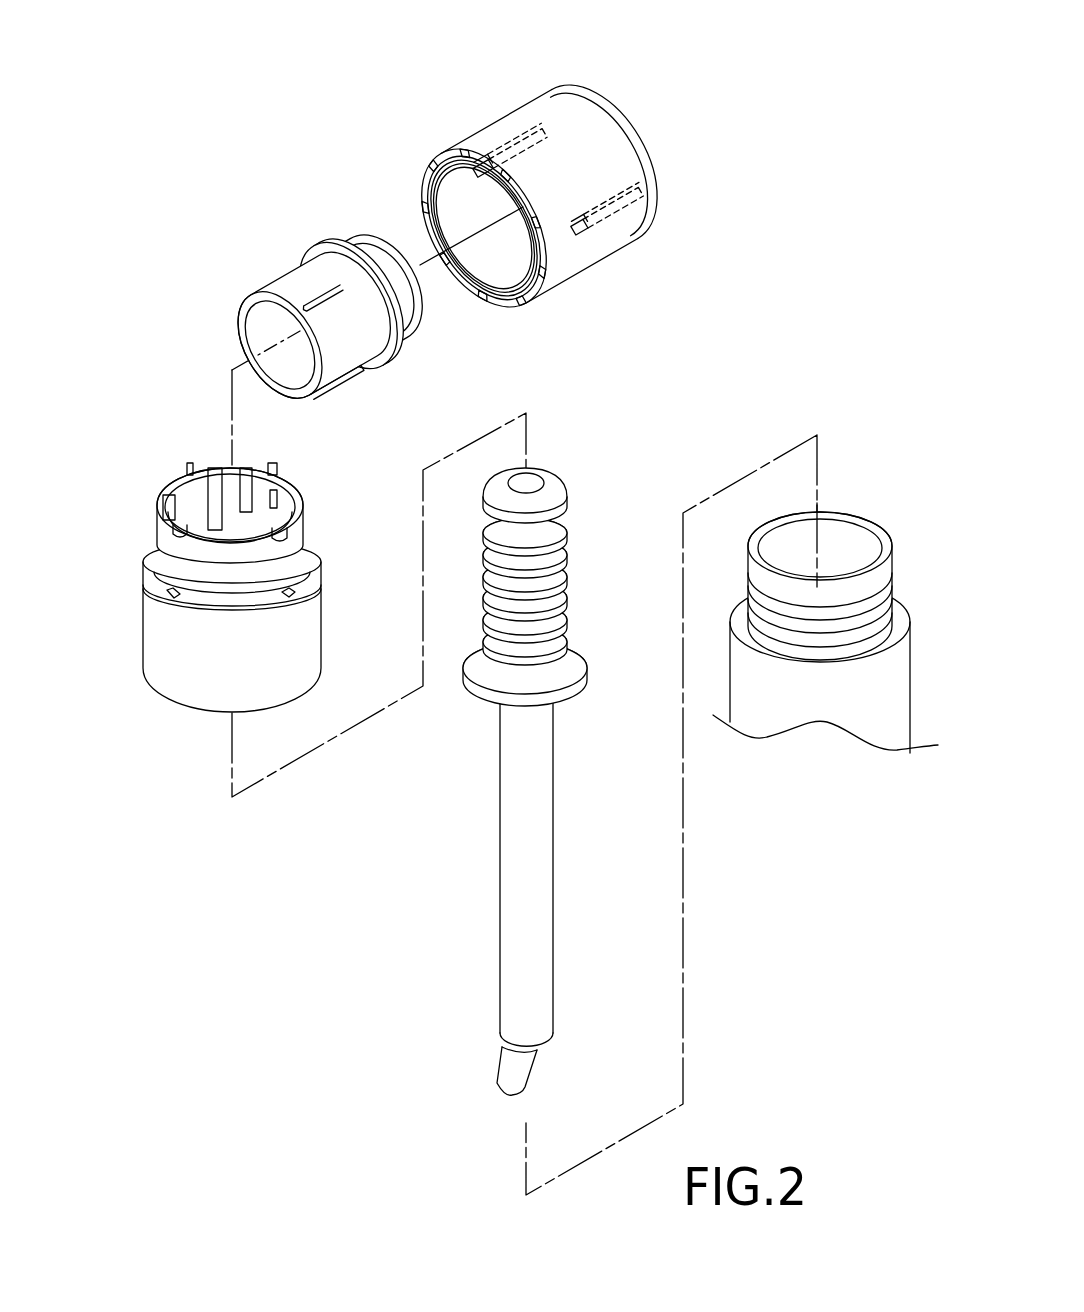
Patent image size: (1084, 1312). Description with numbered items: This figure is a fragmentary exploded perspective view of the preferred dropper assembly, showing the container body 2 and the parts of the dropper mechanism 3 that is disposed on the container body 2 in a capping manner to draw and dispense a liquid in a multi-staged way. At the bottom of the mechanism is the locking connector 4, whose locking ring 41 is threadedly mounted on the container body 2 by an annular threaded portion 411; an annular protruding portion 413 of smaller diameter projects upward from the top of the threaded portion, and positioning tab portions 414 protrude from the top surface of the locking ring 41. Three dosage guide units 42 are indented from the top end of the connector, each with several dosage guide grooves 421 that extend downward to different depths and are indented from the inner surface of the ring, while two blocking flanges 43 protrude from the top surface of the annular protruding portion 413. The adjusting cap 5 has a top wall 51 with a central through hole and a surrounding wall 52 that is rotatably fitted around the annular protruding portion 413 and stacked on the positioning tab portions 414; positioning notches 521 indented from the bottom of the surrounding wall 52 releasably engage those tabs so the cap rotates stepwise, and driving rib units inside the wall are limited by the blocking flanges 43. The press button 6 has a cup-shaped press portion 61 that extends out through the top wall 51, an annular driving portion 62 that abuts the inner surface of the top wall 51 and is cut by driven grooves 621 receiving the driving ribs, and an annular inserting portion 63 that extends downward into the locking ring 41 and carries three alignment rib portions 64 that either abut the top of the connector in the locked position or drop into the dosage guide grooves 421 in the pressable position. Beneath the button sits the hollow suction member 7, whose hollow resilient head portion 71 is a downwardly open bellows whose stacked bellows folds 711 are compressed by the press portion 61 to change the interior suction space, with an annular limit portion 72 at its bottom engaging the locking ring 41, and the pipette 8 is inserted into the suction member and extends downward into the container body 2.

The container body 2 is at (865, 680).
The dropper mechanism 3 is at (598, 83).
The locking connector 4 is at (240, 557).
The locking ring 41 is at (240, 642).
The annular threaded portion 411 is at (160, 605).
The annular protruding portion 413 is at (165, 496).
The positioning tab portion 414 is at (295, 592).
The dosage guide unit 42 is at (236, 466).
The dosage guide grooves 421 is at (250, 480).
The blocking flange 43 is at (195, 465).
The adjusting cap 5 is at (553, 205).
The top wall 51 is at (615, 152).
The surrounding wall 52 is at (612, 108).
The positioning notches 521 is at (484, 228).
The press button 6 is at (349, 302).
The press portion 61 is at (369, 297).
The annular driving portion 62 is at (351, 303).
The driven grooves 621 is at (394, 344).
The annular inserting portion 63 is at (280, 344).
The alignment rib portions 64 is at (327, 342).
The hollow suction member 7 is at (568, 762).
The hollow resilient head portion 71 is at (570, 502).
The sealing rings 711 is at (567, 636).
The annular limit portion 72 is at (582, 660).
The pipette 8 is at (535, 794).